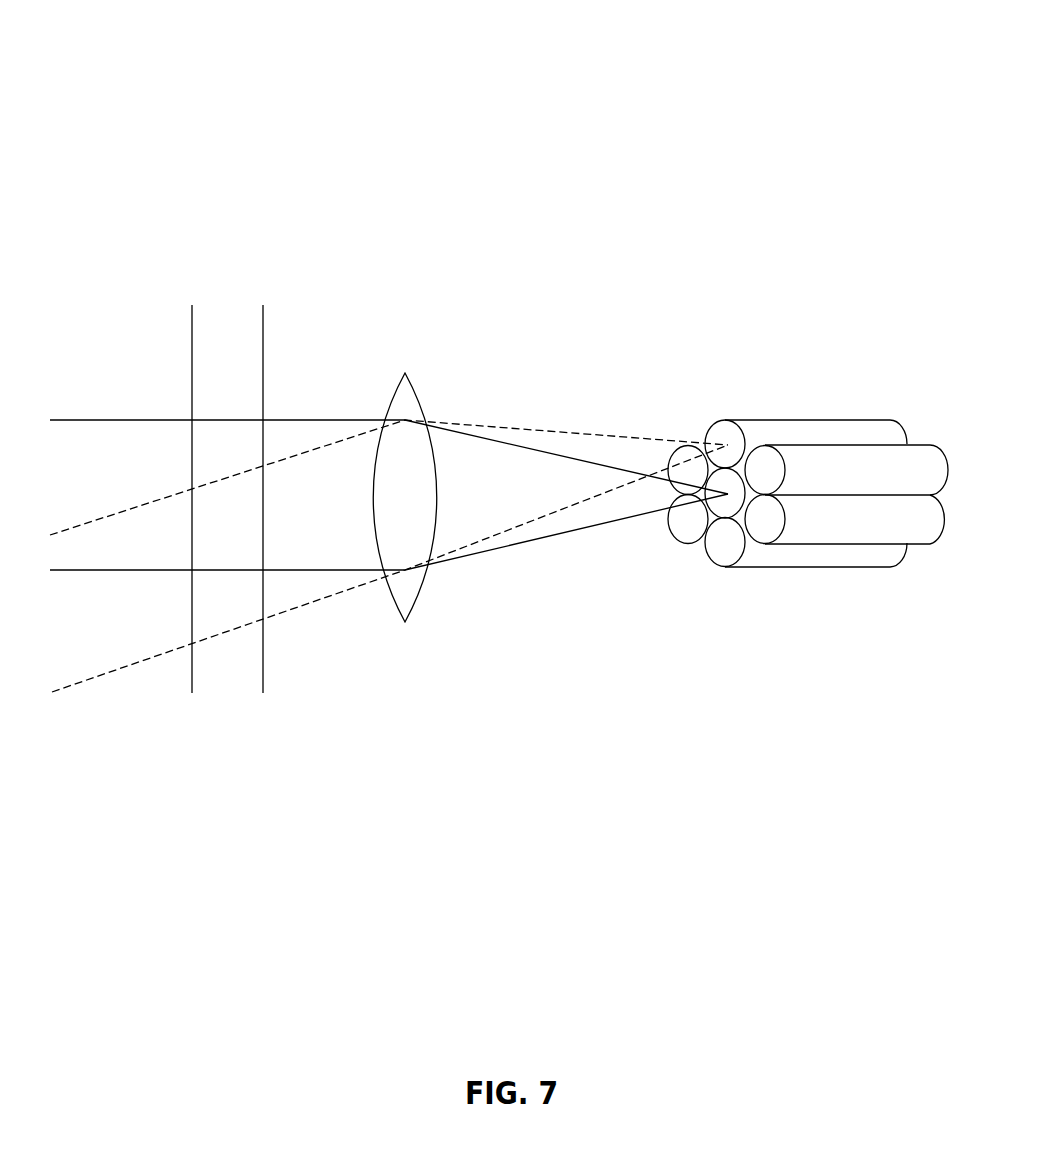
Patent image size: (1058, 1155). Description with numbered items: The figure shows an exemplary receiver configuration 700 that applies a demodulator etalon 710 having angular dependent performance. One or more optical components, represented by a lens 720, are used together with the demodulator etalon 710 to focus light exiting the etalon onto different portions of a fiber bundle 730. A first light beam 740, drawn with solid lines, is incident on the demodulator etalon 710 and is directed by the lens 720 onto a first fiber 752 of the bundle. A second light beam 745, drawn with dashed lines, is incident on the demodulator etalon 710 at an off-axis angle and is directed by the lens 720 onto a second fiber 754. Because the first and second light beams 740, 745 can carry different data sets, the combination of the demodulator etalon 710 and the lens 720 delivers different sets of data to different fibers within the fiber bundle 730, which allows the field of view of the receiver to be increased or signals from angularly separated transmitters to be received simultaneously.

The optical imaging system 700 is at (240, 86).
The demodulator etalon 710 is at (263, 328).
The lens 720 is at (412, 380).
The fiber bundle 730 is at (808, 475).
The first light beam 740 is at (128, 420).
The second light beam 745 is at (105, 675).
The first fiber 752 is at (733, 493).
The second fiber 754 is at (745, 420).